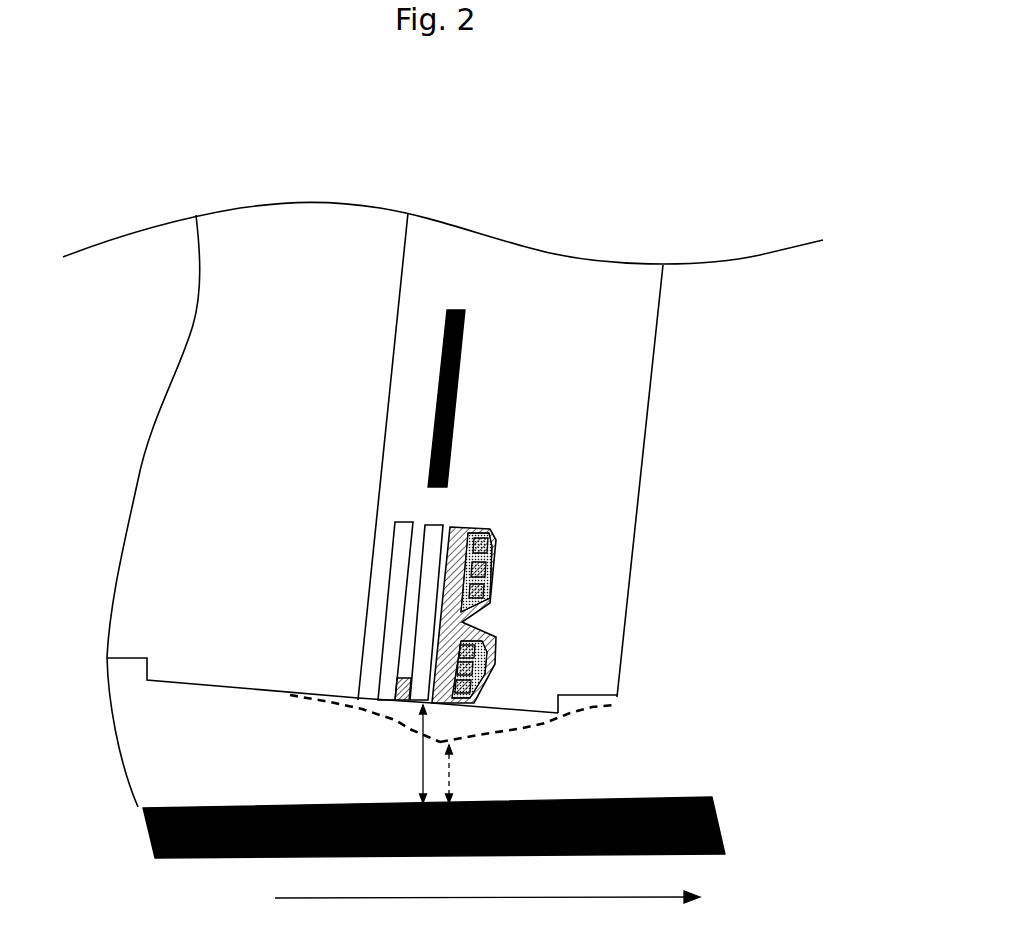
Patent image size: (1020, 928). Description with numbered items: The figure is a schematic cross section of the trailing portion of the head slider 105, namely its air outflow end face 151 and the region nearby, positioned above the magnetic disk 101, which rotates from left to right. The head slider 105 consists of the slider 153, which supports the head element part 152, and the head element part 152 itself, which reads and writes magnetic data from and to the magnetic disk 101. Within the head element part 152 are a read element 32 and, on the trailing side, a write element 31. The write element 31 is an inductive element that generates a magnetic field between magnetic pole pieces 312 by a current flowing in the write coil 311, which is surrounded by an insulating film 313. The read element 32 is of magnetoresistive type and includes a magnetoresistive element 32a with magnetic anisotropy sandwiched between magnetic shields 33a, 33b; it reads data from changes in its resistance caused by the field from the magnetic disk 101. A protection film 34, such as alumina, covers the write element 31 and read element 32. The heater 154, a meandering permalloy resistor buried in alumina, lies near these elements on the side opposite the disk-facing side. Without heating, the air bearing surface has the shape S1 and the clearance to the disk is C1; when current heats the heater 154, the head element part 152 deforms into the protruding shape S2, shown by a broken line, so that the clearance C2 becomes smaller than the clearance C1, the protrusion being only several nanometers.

The head slider 105 is at (545, 190).
The protection film 34 is at (418, 296).
The air outflow end face 151 is at (653, 357).
The head element part 152 is at (698, 487).
The slider 153 is at (125, 662).
The heater 154 is at (455, 413).
The write element 31 is at (599, 615).
The write coil 311 is at (493, 543).
The magnetic pole pieces 312 is at (493, 662).
The insulating film 313 is at (493, 582).
The read element 32 is at (354, 631).
The magnetoresistive element 32a is at (402, 701).
The magnetic shield 33a is at (433, 525).
The magnetic shield 33b is at (395, 540).
The air bearing surface shape during non-heating S1 is at (345, 698).
The protruding shape S2 is at (525, 732).
The clearance during non-heating C1 is at (413, 754).
The clearance during heating C2 is at (464, 774).
The magnetic disk 101 is at (643, 798).